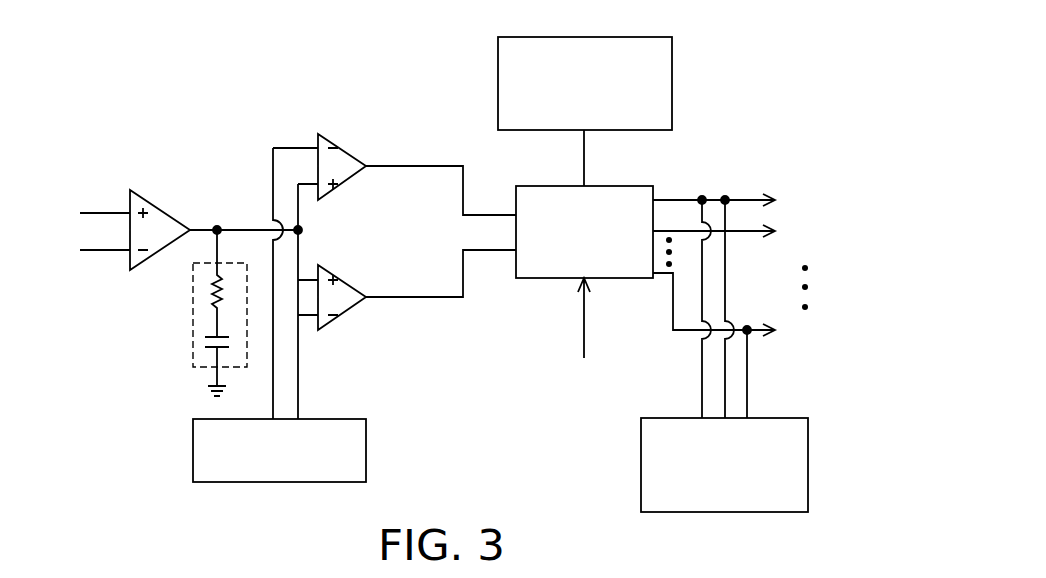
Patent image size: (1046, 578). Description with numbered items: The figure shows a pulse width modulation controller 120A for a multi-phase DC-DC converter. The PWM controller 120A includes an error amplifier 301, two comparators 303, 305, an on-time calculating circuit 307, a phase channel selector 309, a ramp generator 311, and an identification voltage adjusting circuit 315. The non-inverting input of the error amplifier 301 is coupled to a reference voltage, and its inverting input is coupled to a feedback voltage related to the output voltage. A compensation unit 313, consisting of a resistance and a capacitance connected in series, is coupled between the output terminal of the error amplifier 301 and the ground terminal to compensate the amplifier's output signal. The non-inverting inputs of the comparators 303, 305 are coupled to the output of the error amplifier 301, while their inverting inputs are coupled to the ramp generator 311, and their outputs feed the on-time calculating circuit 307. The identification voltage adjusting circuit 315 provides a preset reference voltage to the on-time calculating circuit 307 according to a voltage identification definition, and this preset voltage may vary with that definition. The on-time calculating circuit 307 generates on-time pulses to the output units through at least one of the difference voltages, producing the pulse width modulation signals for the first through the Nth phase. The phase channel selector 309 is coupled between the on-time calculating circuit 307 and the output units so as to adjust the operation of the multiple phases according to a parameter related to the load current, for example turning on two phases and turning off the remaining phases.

The error amplifier 301 is at (164, 211).
The comparator 303 is at (348, 153).
The comparator 305 is at (350, 283).
The on-time calculating circuit 307 is at (642, 186).
The phase channel selector 309 is at (765, 418).
The ramp generator 311 is at (332, 419).
The compensation unit 313 is at (192, 308).
The identification voltage adjusting circuit 315 is at (607, 37).
The PWM controller 120A is at (452, 269).